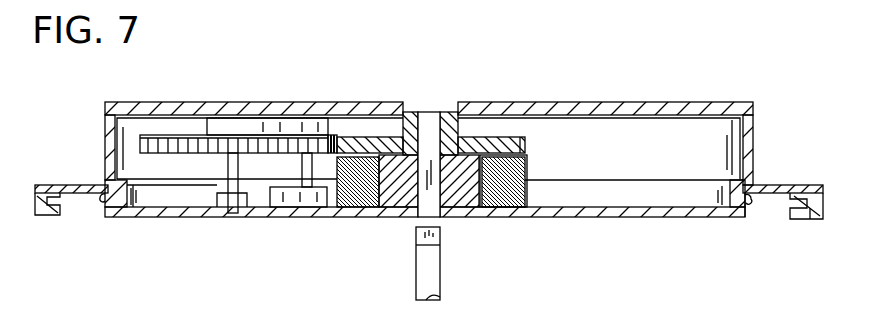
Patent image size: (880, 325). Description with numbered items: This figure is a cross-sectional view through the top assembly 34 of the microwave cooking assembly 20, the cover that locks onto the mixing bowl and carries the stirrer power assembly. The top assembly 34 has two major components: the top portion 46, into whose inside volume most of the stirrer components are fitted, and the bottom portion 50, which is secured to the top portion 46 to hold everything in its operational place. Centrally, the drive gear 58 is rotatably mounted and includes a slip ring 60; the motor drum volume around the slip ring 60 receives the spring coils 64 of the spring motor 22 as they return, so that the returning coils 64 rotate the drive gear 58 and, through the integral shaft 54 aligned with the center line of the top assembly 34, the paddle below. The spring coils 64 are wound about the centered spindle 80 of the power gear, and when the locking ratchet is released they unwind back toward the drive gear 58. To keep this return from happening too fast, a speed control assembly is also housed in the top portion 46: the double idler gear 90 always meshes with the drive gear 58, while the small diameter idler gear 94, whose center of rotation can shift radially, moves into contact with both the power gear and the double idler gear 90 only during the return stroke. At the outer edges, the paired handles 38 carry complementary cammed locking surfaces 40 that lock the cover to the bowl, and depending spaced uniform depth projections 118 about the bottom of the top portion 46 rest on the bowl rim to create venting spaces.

The microwave cooking assembly 20 is at (645, 93).
The top assembly 34 is at (334, 92).
The top portion 46 is at (562, 101).
The bottom portion 50 is at (174, 217).
The double idler gear 90 is at (165, 125).
The small diameter idler gear 94 is at (292, 205).
The drive gear 58 is at (539, 146).
The spring motor 22 is at (353, 217).
The slip ring 60 is at (488, 172).
The spring coils 64 is at (497, 205).
The centered spindle 80 is at (421, 118).
The integral shaft 54 is at (450, 269).
The handles 38 is at (59, 176).
The cammed locking surfaces 40 is at (41, 226).
The depending spaced uniform depth projections 118 is at (108, 200).